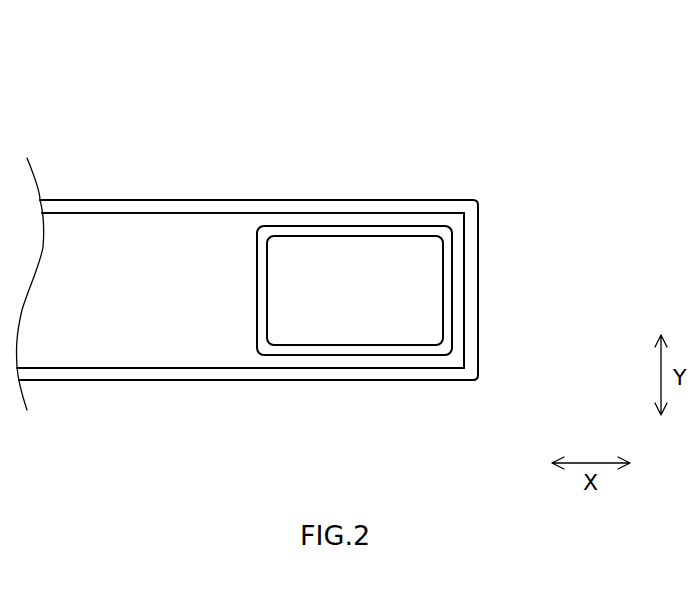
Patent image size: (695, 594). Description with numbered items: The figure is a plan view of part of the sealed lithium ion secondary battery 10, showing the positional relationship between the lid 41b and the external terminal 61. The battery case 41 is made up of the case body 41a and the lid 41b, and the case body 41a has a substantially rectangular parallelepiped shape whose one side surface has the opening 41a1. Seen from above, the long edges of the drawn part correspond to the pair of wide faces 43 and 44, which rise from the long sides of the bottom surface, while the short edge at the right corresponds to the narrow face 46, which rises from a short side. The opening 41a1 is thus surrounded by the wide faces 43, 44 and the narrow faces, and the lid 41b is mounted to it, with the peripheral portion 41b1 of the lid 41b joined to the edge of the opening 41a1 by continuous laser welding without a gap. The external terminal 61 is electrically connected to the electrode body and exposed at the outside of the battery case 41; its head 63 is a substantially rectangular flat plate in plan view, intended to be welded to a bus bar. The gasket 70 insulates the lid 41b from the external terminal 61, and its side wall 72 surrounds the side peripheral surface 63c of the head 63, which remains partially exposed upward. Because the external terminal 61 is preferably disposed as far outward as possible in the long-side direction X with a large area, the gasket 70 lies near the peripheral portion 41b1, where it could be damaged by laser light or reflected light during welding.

The secondary battery 10 is at (118, 146).
The battery case 41 is at (288, 180).
The case body 41a is at (123, 383).
The opening 41a1 is at (212, 360).
The lid 41b is at (153, 240).
The peripheral portion 41b1 is at (363, 369).
The wide face 43 is at (175, 382).
The wide face 44 is at (229, 200).
The narrow face 46 is at (478, 282).
The external terminal 61 is at (338, 255).
The head 63 is at (355, 250).
The side peripheral surface 63c is at (398, 327).
The gasket 70 is at (422, 231).
The side wall 72 is at (389, 252).